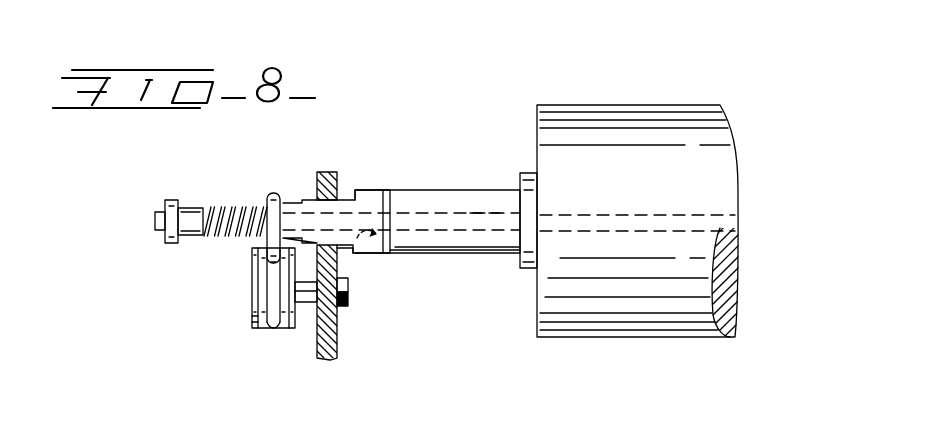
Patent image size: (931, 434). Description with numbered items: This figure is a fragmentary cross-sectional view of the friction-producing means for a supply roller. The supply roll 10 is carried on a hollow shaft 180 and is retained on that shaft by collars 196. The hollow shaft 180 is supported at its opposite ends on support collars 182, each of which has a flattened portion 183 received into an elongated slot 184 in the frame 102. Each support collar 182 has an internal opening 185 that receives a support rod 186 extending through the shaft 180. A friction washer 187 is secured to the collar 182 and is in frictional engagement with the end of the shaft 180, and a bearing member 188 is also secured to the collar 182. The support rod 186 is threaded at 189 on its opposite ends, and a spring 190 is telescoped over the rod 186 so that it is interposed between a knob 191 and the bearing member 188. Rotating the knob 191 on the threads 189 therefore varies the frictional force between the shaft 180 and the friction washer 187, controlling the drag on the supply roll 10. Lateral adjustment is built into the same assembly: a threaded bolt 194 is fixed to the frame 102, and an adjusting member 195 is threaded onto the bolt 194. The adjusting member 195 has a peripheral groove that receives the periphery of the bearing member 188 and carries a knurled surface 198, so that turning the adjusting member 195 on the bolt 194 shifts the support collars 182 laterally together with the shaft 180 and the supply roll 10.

The supply roll 10 is at (538, 96).
The frame 102 is at (337, 347).
The hollow shaft 180 is at (432, 202).
The support collar 182 is at (367, 188).
The flattened portion 183 is at (310, 199).
The elongated slot 184 is at (345, 262).
The internal opening 185 is at (387, 257).
The support rod 186 is at (482, 213).
The friction washer 187 is at (387, 190).
The bearing member 188 is at (267, 198).
The threads 189 is at (203, 208).
The spring 190 is at (210, 240).
The knob 191 is at (155, 220).
The threaded bolt 194 is at (343, 307).
The adjusting member 195 is at (264, 350).
The collars 196 is at (527, 270).
The knurled surface 198 is at (260, 328).